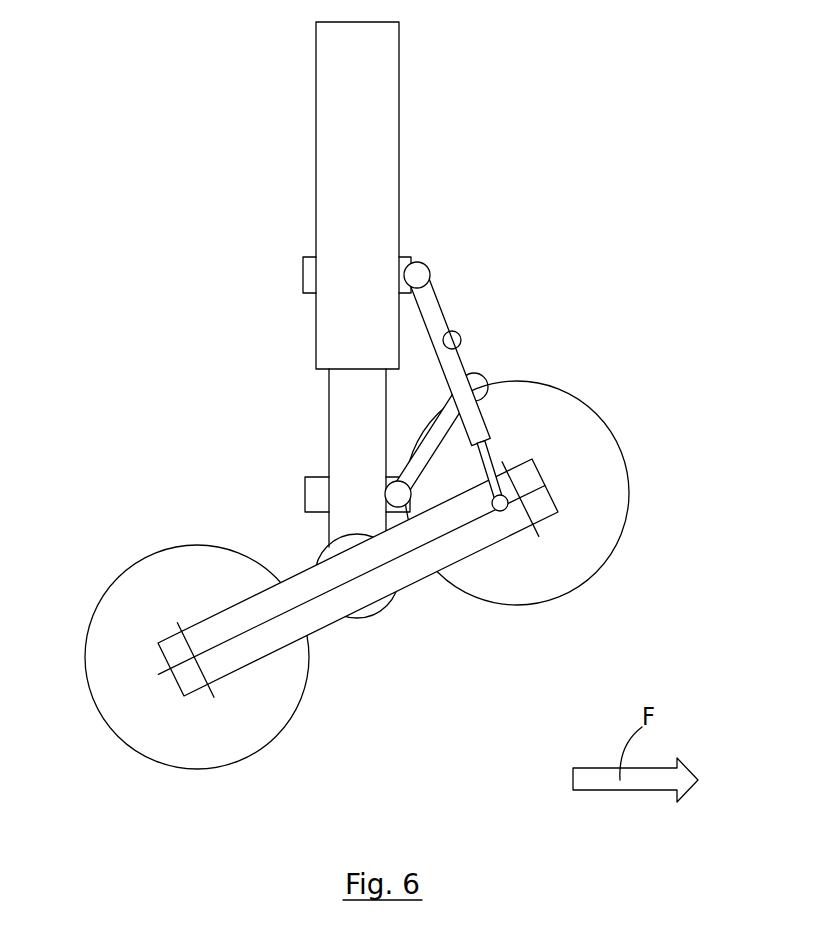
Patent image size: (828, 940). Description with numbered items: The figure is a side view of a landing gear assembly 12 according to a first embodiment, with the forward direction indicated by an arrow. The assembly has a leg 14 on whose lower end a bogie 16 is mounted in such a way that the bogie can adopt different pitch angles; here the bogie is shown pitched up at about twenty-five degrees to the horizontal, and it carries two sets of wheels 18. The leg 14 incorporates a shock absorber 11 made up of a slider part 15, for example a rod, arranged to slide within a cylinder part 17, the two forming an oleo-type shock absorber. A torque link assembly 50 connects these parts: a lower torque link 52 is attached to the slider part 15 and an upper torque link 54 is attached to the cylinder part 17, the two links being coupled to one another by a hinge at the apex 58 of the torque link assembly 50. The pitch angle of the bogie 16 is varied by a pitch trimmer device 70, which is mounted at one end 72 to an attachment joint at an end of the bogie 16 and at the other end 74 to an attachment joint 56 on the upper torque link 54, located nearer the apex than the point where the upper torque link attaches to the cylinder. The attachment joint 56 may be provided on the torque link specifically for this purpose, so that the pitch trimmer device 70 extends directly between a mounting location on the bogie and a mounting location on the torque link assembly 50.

The shock absorber 11 is at (278, 378).
The landing gear assembly 12 is at (136, 313).
The leg 14 is at (325, 333).
The slider part 15 is at (333, 423).
The bogie 16 is at (322, 620).
The cylinder part 17 is at (391, 90).
The wheels 18 is at (110, 603).
The torque link assembly 50 is at (437, 308).
The lower torque link 52 is at (428, 455).
The upper torque link 54 is at (432, 290).
The attachment joint 56 is at (460, 343).
The apex 58 is at (490, 380).
The pitch trimmer device 70 is at (480, 420).
The one end 72 is at (507, 503).
The other end 74 is at (460, 338).